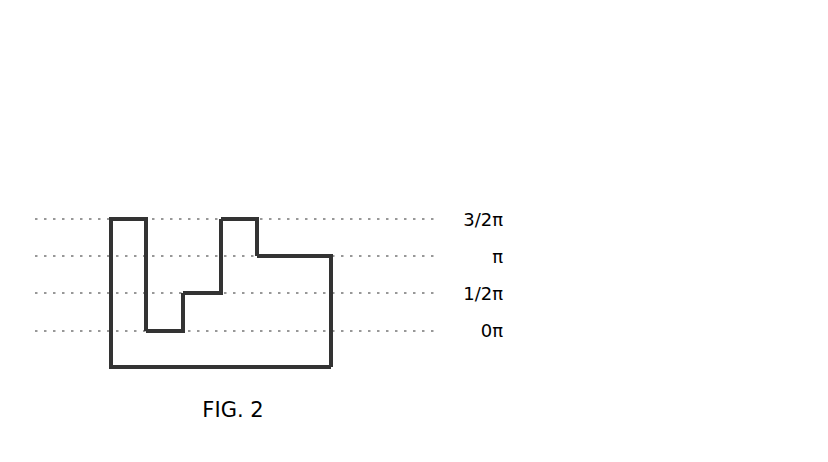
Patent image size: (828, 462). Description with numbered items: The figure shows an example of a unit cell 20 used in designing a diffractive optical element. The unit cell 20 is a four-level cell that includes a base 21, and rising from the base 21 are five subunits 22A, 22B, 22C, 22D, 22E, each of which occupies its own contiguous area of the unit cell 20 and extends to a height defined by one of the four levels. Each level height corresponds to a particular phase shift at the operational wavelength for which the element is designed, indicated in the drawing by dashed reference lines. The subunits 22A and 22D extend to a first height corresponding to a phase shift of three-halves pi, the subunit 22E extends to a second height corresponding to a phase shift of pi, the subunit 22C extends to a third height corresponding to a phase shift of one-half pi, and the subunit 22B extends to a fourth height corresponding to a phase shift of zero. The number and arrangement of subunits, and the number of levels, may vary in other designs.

The unit cell 20 is at (289, 227).
The base 21 is at (115, 353).
The subunit 22A is at (120, 210).
The subunit 22B is at (163, 313).
The subunit 22C is at (202, 282).
The subunit 22D is at (244, 205).
The subunit 22E is at (293, 242).